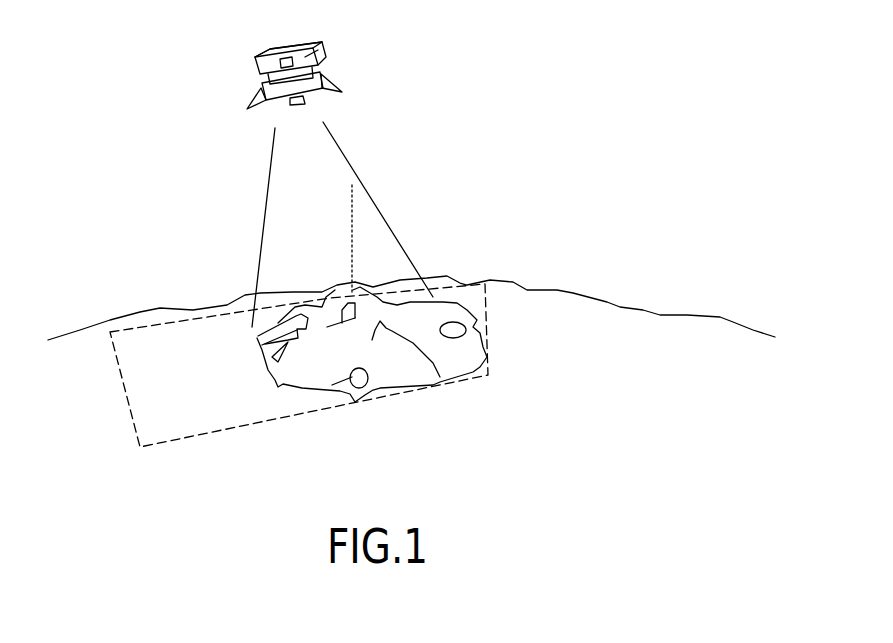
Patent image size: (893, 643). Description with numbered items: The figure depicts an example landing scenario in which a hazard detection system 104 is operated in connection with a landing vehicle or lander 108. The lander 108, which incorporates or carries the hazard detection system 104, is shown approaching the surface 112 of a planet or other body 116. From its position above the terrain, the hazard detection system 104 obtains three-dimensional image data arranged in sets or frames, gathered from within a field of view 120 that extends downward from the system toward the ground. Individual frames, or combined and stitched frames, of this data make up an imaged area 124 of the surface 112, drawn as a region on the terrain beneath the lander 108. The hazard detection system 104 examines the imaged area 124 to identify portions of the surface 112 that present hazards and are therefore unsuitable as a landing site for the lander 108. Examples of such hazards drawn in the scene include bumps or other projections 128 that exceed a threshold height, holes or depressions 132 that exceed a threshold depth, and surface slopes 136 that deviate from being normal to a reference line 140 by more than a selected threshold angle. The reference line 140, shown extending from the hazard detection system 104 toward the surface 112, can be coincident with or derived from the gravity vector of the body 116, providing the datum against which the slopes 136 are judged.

The hazard detection system 104 is at (318, 51).
The lander 108 is at (271, 53).
The surface 112 is at (411, 285).
The body 116 is at (554, 201).
The field of view 120 is at (267, 192).
The imaged area 124 is at (150, 333).
The projections 128 is at (440, 377).
The depressions 132 is at (256, 340).
The surface slopes 136 is at (275, 363).
The reference line 140 is at (353, 202).